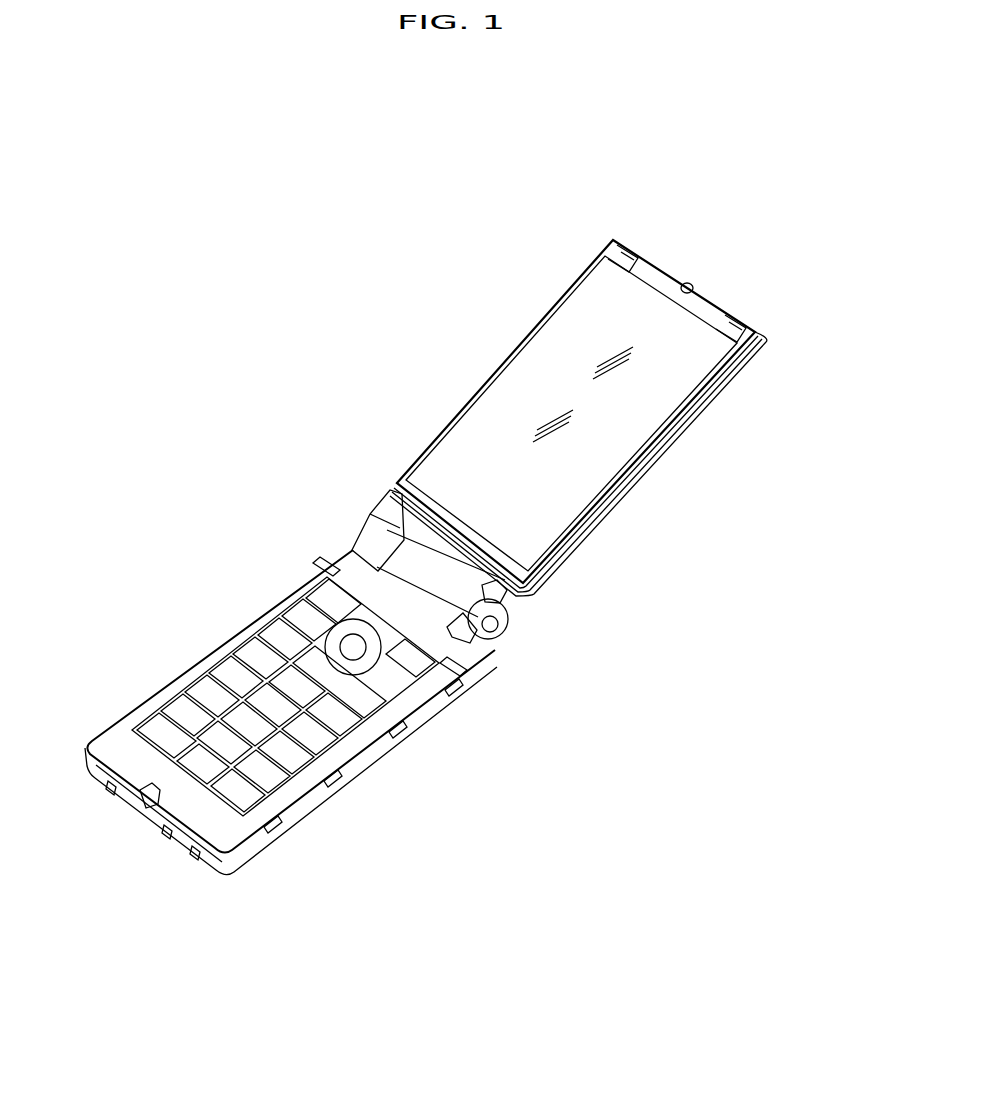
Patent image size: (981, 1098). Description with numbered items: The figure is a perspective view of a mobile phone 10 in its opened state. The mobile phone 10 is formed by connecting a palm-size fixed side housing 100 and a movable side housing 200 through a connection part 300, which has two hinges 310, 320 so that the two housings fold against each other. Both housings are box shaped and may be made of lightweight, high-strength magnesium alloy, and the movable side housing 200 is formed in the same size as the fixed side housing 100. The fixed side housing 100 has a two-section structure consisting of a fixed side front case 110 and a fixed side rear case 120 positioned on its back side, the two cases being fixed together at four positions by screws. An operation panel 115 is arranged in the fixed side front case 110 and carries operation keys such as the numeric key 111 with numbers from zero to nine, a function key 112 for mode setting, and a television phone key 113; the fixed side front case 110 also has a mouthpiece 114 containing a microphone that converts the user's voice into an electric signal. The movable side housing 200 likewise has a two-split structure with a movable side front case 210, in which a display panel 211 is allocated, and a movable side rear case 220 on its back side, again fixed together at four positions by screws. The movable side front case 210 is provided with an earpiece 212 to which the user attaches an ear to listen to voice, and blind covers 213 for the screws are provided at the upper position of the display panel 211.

The mobile phone 10 is at (698, 138).
The fixed side housing 100 is at (330, 785).
The fixed side front case 110 is at (260, 833).
The numeric key 111 is at (221, 695).
The function key 112 is at (430, 664).
The television phone key 113 is at (143, 730).
The mouthpiece 114 is at (150, 800).
The operation panel 115 is at (272, 638).
The fixed side rear case 120 is at (183, 845).
The movable side housing 200 is at (538, 324).
The movable side front case 210 is at (693, 403).
The display panel 211 is at (471, 432).
The earpiece 212 is at (690, 284).
The blind covers 213 is at (626, 250).
The movable side rear case 220 is at (634, 484).
The connection part 300 is at (374, 531).
The hinge 310 is at (500, 608).
The hinge 320 is at (492, 630).